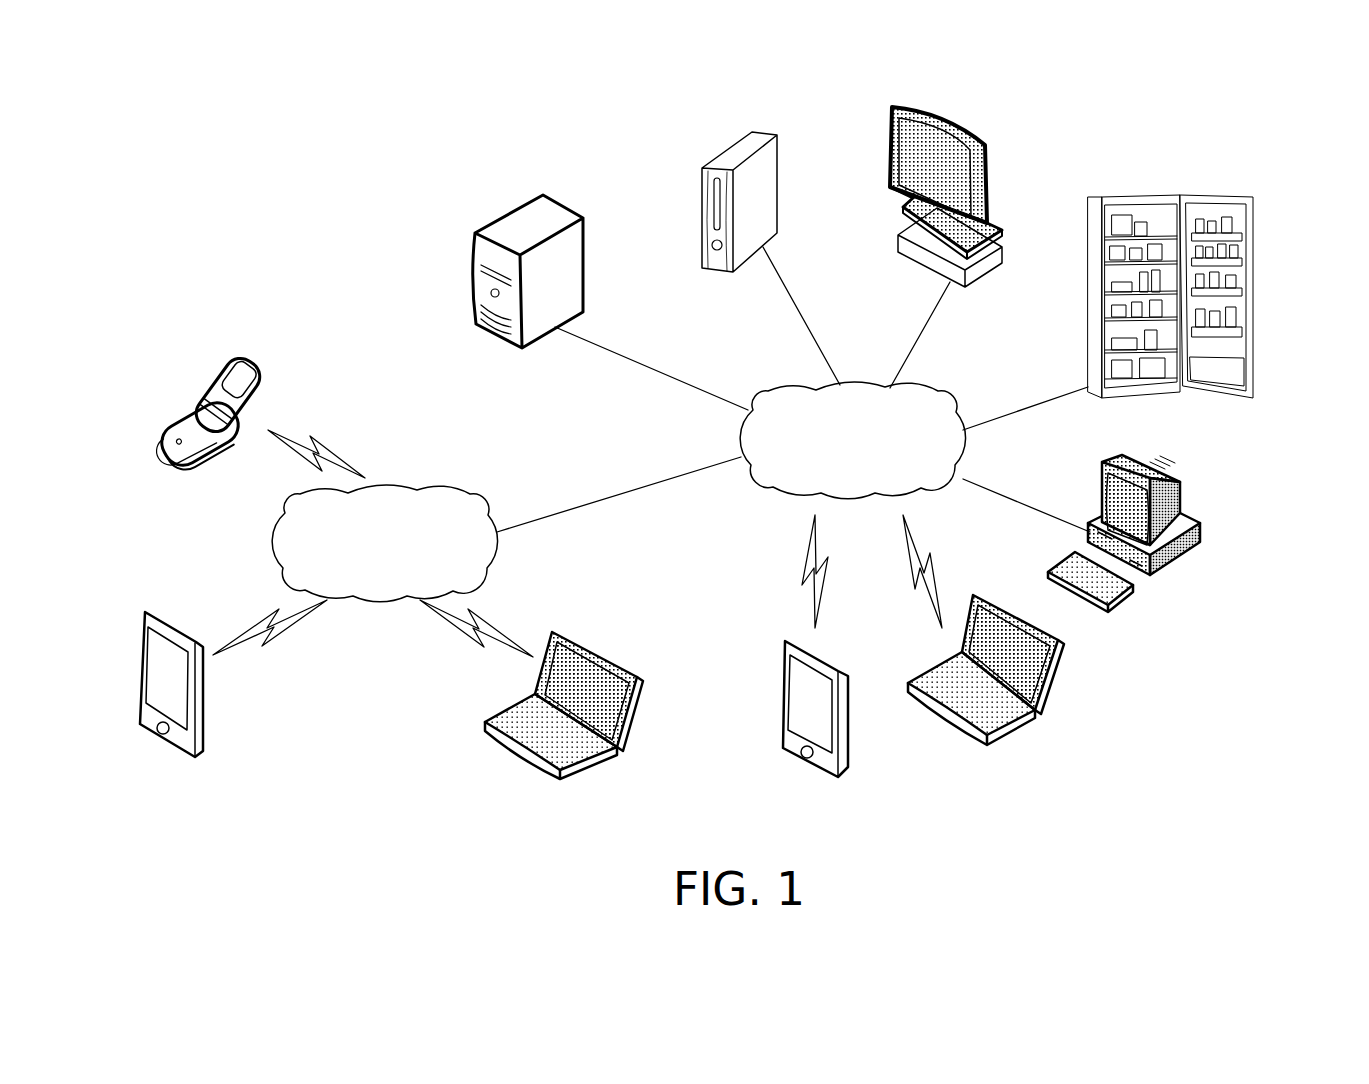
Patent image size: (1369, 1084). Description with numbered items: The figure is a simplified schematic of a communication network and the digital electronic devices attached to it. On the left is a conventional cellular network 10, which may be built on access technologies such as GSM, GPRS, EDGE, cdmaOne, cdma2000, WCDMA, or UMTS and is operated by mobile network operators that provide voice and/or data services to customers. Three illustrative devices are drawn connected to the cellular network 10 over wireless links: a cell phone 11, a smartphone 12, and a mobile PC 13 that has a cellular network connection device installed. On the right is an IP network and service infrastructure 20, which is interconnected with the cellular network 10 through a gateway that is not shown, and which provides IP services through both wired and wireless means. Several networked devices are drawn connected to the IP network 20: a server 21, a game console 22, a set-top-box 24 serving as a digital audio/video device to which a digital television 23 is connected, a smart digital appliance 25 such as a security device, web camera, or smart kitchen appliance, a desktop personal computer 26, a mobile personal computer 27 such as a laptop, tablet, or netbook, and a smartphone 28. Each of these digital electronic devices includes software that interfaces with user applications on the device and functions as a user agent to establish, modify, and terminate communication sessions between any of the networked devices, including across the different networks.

The cellular network 10 is at (396, 585).
The cell phone 11 is at (208, 385).
The smartphone 12 is at (138, 657).
The mobile PC 13 is at (513, 702).
The IP network and service infrastructure 20 is at (864, 482).
The server 21 is at (585, 233).
The game console 22 is at (778, 158).
The digital television 23 is at (988, 157).
The set-top-box 24 is at (1003, 262).
The smart digital appliance 25 is at (1256, 205).
The desktop personal computer 26 is at (1185, 495).
The mobile personal computer 27 is at (1060, 665).
The smartphone 28 is at (848, 758).